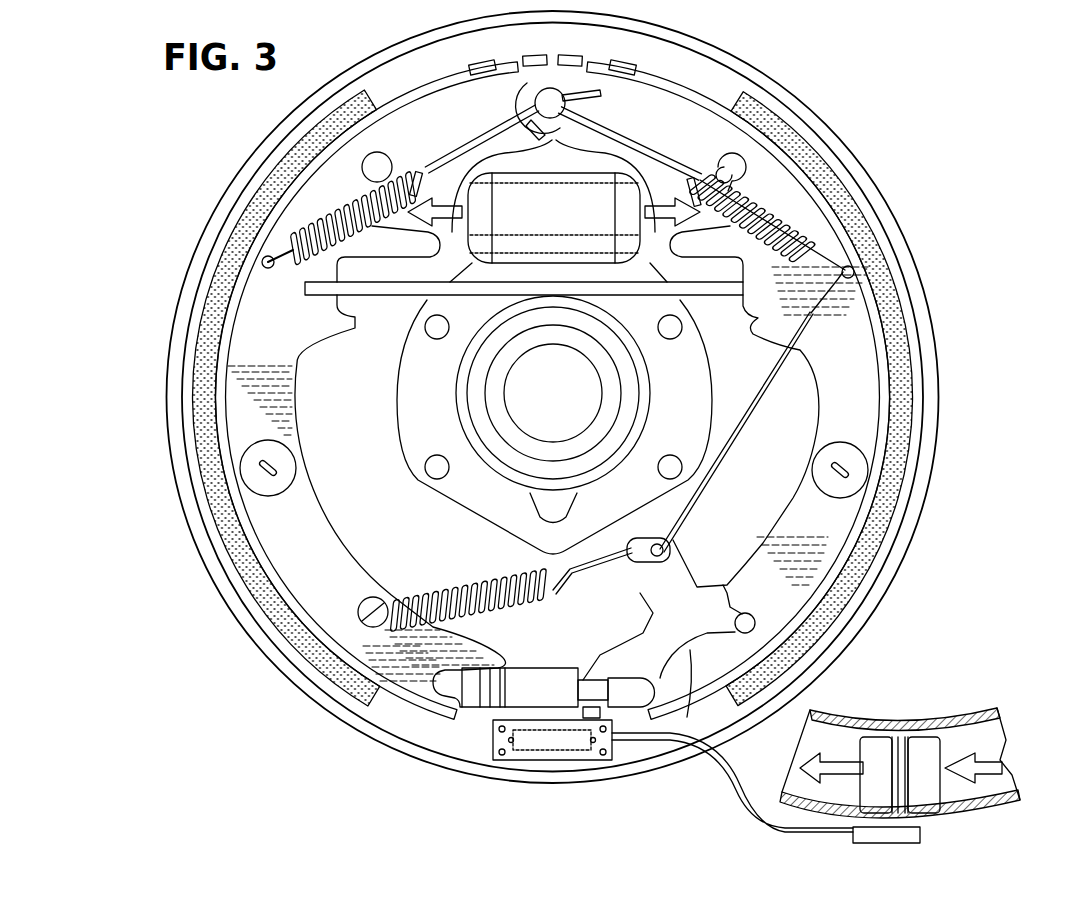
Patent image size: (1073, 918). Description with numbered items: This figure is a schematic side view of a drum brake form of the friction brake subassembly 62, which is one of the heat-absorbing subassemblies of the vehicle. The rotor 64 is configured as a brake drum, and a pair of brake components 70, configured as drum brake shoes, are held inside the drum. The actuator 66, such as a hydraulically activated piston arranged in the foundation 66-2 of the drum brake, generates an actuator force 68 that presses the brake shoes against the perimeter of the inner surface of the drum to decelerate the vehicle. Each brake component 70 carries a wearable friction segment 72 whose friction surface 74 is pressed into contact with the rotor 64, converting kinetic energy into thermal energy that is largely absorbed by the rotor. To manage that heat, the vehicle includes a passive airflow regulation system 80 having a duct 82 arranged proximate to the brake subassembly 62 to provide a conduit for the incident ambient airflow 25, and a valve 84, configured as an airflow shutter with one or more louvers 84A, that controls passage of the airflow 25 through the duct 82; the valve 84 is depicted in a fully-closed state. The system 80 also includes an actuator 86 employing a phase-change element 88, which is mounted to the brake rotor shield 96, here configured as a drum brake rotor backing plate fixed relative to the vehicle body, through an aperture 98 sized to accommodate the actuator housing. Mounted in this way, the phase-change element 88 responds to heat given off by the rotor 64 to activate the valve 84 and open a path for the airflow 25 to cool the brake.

The incident ambient airflow 25 is at (838, 767).
The friction brake subassembly 62 is at (886, 188).
The rotor 64 is at (620, 781).
The actuator 66 is at (554, 218).
The foundation 66-2 is at (347, 495).
The actuator force 68 is at (440, 210).
The brake component 70 is at (196, 444).
The friction segment 72 is at (290, 160).
The friction surface 74 is at (310, 665).
The passive airflow regulation system 80 is at (731, 816).
The duct 82 is at (968, 712).
The valve 84 is at (921, 752).
The louver 84A is at (927, 805).
The actuator 86 is at (540, 752).
The phase-change element 88 is at (551, 746).
The brake rotor shield 96 is at (432, 737).
The aperture 98 is at (490, 742).